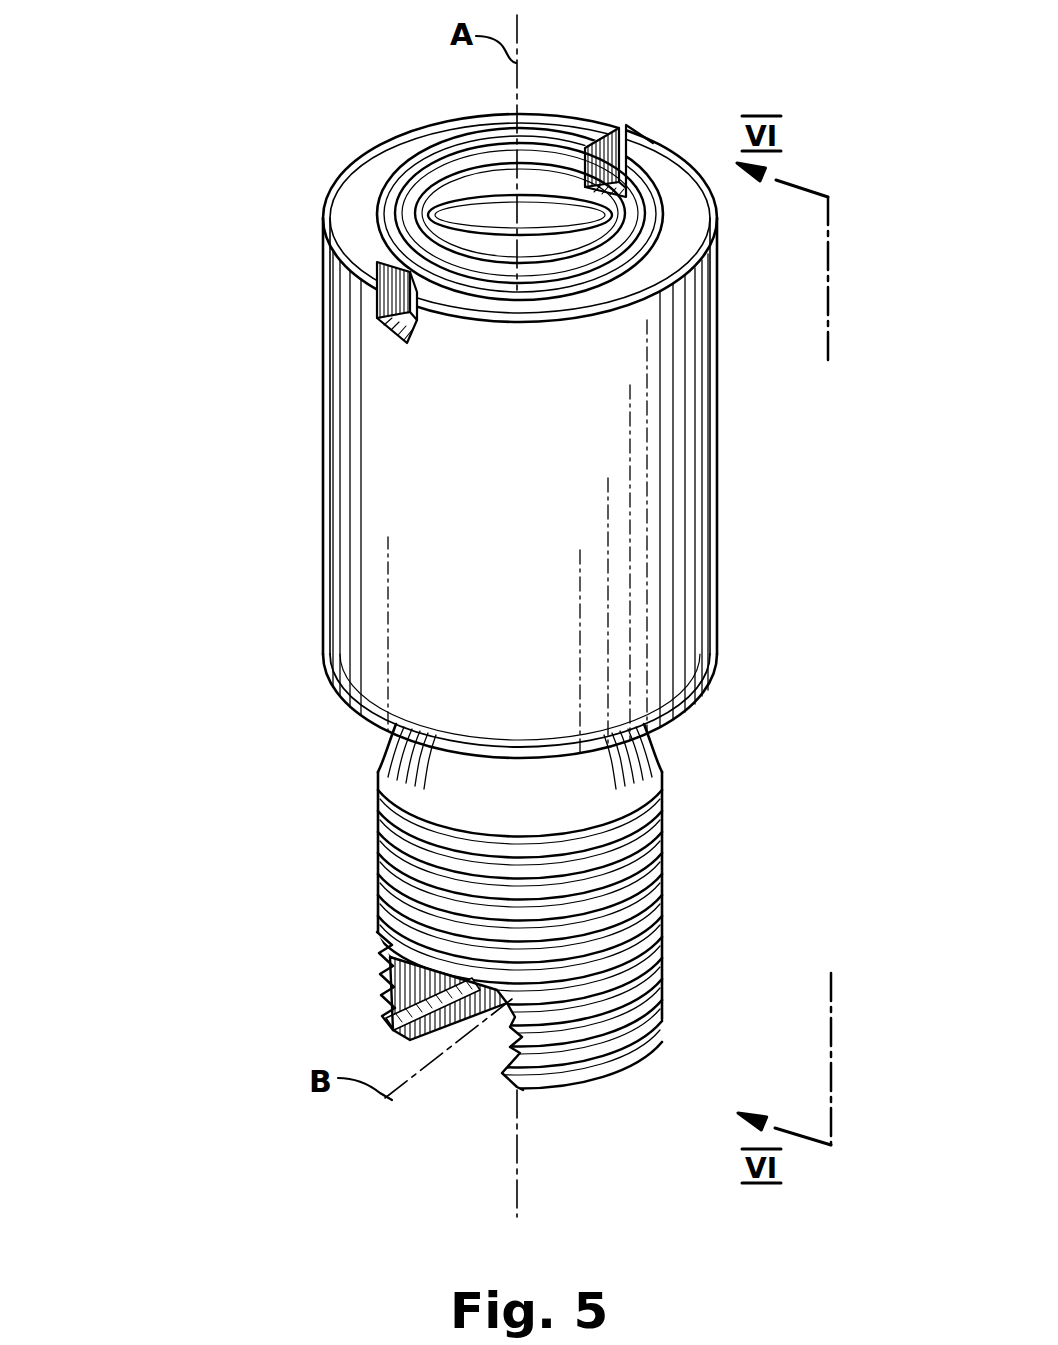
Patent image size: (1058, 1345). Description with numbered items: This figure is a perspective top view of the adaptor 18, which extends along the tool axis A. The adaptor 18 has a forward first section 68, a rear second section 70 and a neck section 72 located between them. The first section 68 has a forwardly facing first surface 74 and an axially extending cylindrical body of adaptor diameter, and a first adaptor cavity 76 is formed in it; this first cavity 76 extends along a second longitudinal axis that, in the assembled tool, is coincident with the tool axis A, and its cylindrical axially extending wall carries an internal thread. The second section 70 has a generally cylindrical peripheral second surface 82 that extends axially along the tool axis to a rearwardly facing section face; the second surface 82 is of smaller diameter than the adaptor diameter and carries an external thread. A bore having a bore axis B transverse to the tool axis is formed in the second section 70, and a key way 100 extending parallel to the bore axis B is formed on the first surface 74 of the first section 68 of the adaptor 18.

The adaptor 18 is at (168, 125).
The first section 68 is at (258, 454).
The second section 70 is at (310, 846).
The neck section 72 is at (308, 725).
The first surface 74 is at (362, 180).
The first adaptor cavity 76 is at (486, 216).
The second surface 82 is at (365, 920).
The key way 100 is at (634, 136).